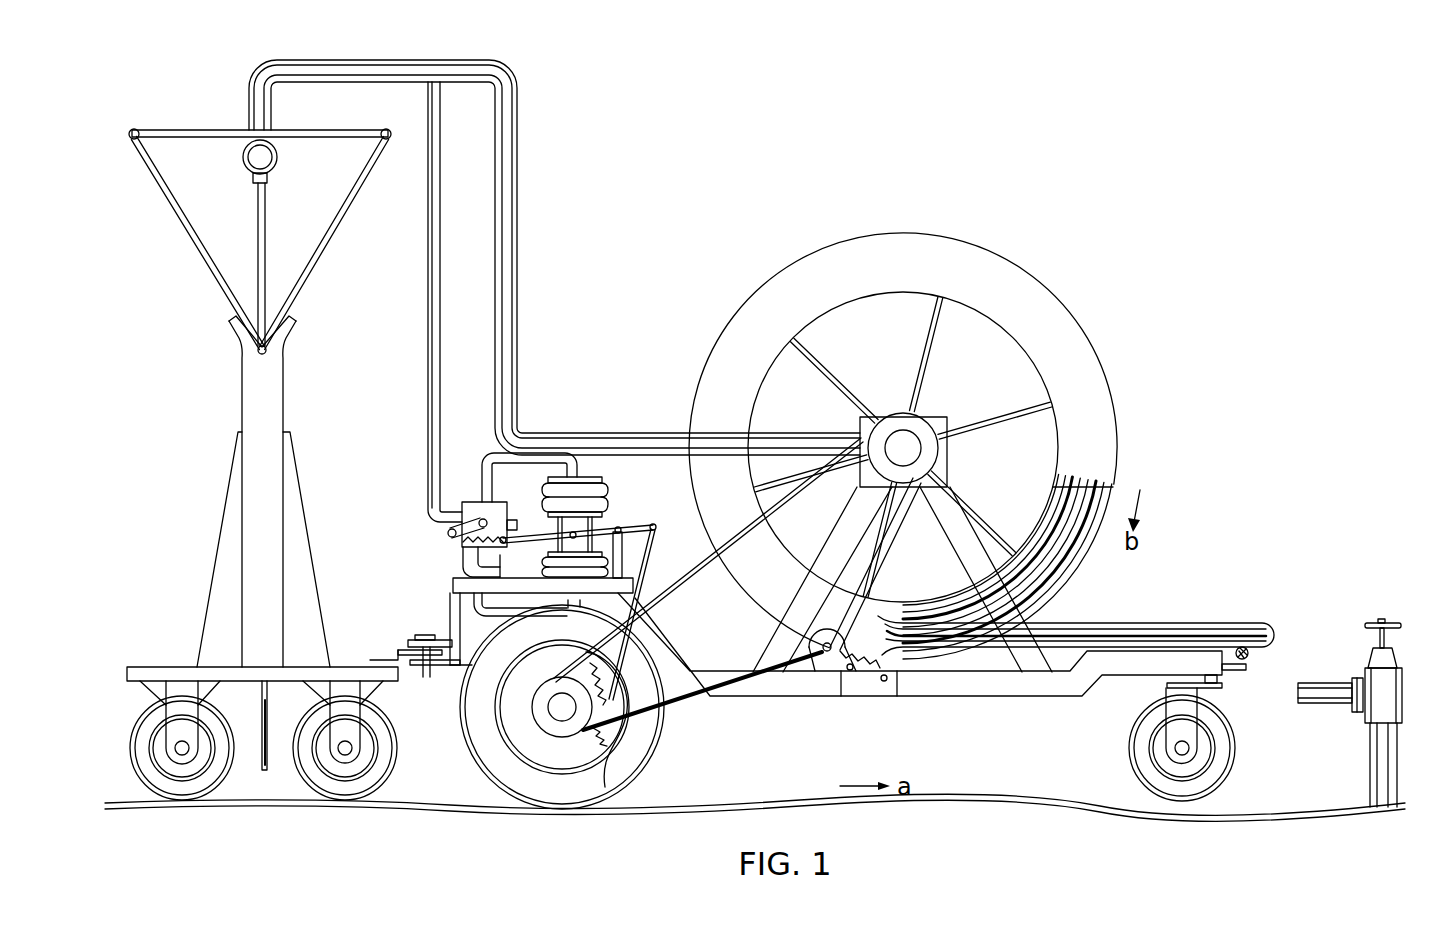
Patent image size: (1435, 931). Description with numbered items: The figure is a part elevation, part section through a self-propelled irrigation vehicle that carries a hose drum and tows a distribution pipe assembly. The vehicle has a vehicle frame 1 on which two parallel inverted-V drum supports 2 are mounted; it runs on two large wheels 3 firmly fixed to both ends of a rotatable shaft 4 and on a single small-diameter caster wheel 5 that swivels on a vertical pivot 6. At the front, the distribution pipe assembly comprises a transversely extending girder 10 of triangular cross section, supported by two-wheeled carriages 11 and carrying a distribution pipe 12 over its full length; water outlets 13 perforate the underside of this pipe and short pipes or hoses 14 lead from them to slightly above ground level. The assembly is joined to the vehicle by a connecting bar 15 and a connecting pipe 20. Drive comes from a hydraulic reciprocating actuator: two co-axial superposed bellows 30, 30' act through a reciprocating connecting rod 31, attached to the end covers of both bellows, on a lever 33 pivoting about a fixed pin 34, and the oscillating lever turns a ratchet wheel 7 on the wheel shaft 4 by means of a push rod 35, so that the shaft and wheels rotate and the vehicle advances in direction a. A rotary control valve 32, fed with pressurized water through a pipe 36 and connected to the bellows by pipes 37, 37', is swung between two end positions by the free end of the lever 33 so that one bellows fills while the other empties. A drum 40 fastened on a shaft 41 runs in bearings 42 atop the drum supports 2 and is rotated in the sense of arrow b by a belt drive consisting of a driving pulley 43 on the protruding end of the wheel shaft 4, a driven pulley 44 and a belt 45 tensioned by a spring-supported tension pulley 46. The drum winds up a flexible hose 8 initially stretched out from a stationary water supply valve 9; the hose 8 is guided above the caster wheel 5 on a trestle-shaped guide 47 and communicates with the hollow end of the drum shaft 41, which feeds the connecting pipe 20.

The vehicle frame 1 is at (1056, 688).
The drum supports 2 is at (1008, 673).
The large wheels 3 is at (638, 755).
The rotatable shaft 4 is at (556, 710).
The caster wheel 5 is at (1218, 770).
The vertical pivot 6 is at (1214, 688).
The ratchet wheel 7 is at (607, 738).
The flexible hose 8 is at (1247, 636).
The water supply valve 9 is at (1372, 712).
The girder 10 is at (327, 245).
The two-wheeled carriages 11 is at (162, 667).
The distribution pipe 12 is at (246, 152).
The water outlets 13 is at (270, 177).
The short pipes or hoses 14 is at (266, 248).
The connecting bar 15 is at (417, 641).
The connecting pipe 20 is at (367, 70).
The bellows 30 is at (554, 564).
The bellows 30' is at (599, 488).
The reciprocating connecting rod 31 is at (580, 523).
The rotary control valve 32 is at (473, 507).
The lever 33 is at (636, 527).
The fixed pin 34 is at (622, 552).
The push rod 35 is at (648, 560).
The pipe 36 is at (428, 383).
The pipe 37 is at (524, 621).
The pipe 37' is at (534, 449).
The drum 40 is at (1048, 303).
The drum shaft 41 is at (912, 448).
The bearings 42 is at (938, 473).
The driving pulley 43 is at (558, 730).
The driven pulley 44 is at (901, 422).
The belt 45 is at (697, 701).
The tension pulley 46 is at (827, 666).
The trestle-shaped guide 47 is at (1248, 659).